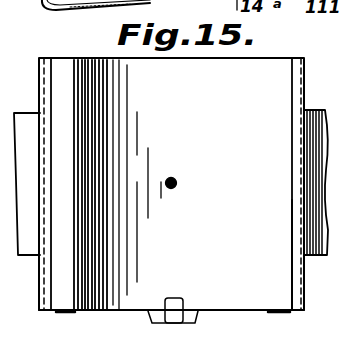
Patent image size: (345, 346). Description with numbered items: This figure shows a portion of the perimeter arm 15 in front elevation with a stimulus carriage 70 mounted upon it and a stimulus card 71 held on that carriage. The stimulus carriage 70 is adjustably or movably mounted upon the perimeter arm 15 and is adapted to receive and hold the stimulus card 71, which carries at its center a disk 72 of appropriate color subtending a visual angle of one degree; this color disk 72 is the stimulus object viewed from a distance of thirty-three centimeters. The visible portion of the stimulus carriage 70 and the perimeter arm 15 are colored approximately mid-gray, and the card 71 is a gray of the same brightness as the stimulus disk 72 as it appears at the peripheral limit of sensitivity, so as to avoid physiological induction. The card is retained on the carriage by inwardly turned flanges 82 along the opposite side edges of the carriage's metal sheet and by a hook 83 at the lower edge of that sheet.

The perimeter arm 15 is at (25, 118).
The stimulus carriage 70 is at (303, 311).
The stimulus card 71 is at (255, 300).
The disk 72 is at (176, 189).
The inwardly turned flanges 82 is at (48, 298).
The hook 83 is at (183, 301).